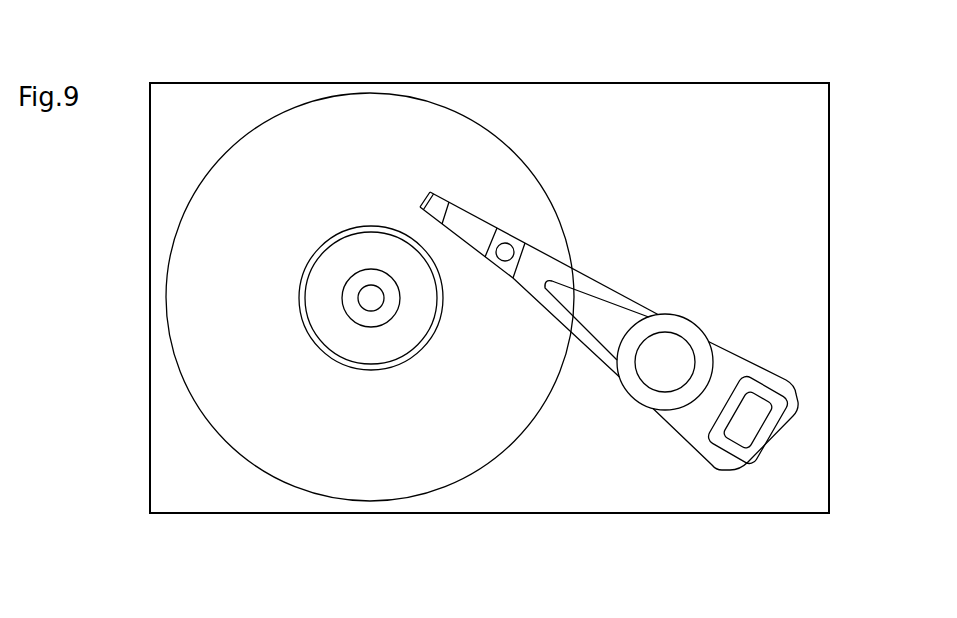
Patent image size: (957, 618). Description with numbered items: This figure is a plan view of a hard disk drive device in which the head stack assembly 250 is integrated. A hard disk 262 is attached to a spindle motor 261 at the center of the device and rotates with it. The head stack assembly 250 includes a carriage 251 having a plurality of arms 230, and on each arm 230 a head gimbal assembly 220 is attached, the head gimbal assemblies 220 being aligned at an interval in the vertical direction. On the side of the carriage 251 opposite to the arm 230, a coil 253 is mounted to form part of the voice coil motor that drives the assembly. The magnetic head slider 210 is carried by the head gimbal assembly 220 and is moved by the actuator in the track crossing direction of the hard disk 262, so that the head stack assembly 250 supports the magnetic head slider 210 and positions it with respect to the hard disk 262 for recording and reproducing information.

The magnetic head slider 210 is at (444, 192).
The head gimbal assembly 220 is at (477, 251).
The arm 230 is at (597, 357).
The head stack assembly 250 is at (671, 426).
The carriage 251 is at (673, 314).
The coil 253 is at (773, 432).
The spindle motor 261 is at (371, 311).
The hard disk 262 is at (296, 487).